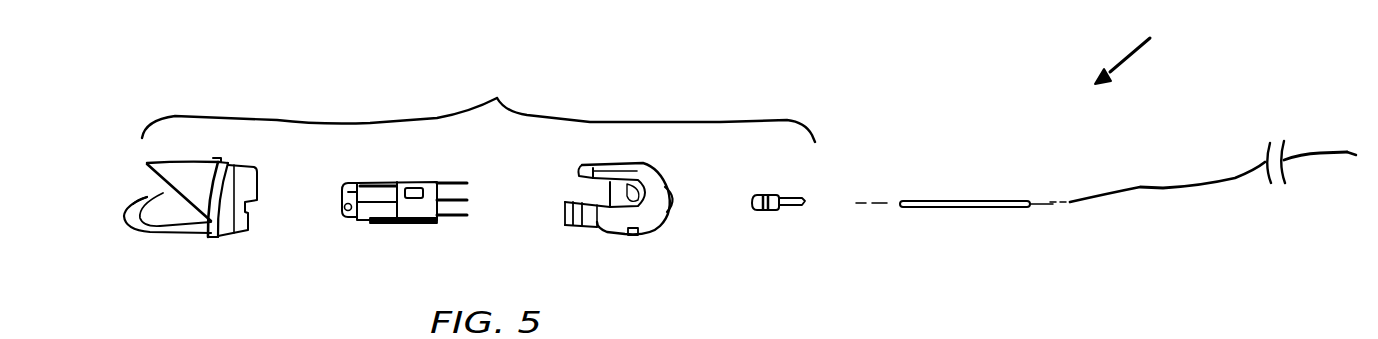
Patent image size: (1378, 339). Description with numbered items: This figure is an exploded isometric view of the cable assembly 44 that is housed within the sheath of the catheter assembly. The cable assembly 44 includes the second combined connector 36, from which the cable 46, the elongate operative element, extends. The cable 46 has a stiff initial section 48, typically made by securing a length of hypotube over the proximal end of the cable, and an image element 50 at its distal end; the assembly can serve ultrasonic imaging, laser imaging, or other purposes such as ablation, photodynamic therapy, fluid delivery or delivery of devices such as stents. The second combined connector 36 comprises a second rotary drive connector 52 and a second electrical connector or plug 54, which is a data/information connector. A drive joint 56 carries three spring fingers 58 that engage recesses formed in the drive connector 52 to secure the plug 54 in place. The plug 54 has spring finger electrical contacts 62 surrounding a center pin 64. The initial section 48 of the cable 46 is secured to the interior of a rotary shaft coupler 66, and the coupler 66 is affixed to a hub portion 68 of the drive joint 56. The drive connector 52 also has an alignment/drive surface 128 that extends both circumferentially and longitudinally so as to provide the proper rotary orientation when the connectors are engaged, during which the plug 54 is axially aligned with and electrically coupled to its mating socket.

The second combined connector 36 is at (497, 98).
The cable assembly 44 is at (1145, 51).
The cable 46 is at (1163, 189).
The stiff initial section 48 is at (943, 209).
The image element 50 is at (1353, 153).
The second rotary drive connector 52 is at (187, 234).
The second electrical connector or plug 54 is at (395, 223).
The drive joint 56 is at (600, 238).
The spring fingers 58 is at (632, 236).
The spring finger electrical contacts 62 is at (375, 219).
The center pin 64 is at (342, 202).
The rotary shaft coupler 66 is at (787, 208).
The hub portion 68 is at (670, 215).
The alignment/drive surface 128 is at (143, 233).